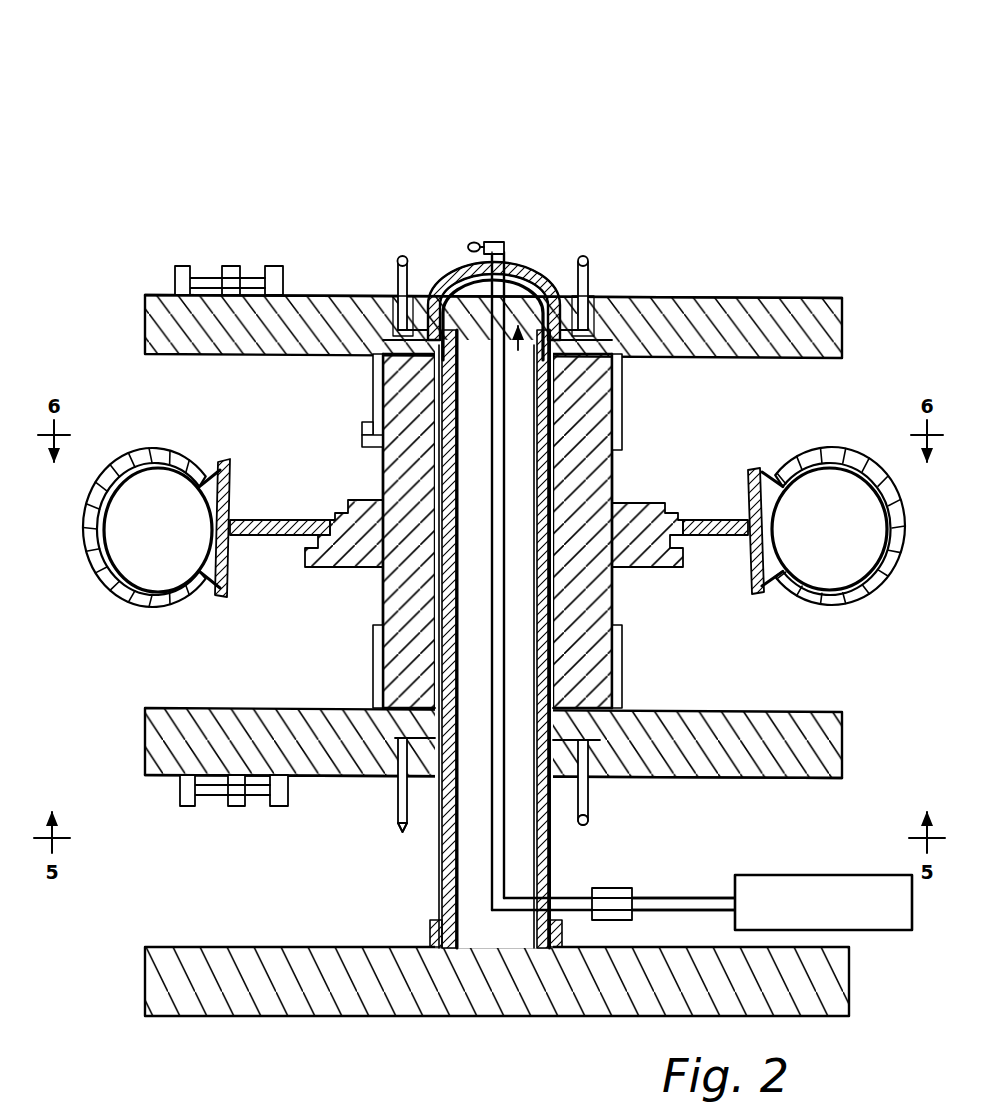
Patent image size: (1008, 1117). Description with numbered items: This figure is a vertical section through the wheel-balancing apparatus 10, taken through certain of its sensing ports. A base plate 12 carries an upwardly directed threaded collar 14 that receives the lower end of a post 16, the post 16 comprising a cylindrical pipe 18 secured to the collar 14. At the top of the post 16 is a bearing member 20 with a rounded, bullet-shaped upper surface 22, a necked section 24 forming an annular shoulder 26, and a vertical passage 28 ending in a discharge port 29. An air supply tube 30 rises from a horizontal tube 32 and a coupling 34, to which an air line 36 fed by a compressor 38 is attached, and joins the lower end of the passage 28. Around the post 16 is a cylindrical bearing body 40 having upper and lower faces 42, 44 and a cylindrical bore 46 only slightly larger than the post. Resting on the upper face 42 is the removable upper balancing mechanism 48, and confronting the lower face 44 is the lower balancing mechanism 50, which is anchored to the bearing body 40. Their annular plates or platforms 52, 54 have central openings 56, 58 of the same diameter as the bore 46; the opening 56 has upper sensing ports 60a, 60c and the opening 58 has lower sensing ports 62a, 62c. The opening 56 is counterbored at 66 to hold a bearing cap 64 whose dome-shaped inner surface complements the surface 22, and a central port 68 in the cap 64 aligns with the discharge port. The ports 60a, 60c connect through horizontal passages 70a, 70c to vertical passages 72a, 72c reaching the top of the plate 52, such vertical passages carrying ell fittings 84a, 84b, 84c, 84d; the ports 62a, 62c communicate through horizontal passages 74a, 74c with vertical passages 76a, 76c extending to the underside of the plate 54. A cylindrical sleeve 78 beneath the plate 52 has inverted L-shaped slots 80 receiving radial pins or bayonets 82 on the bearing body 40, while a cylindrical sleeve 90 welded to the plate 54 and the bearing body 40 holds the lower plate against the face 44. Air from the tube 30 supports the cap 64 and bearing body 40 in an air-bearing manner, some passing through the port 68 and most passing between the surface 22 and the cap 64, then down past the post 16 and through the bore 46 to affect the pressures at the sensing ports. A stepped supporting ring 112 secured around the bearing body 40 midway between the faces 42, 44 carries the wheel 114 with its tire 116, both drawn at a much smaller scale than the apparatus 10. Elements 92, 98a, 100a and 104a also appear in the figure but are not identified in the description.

The apparatus 10 is at (604, 96).
The base plate 12 is at (208, 947).
The threaded collar 14 is at (430, 935).
The post 16 is at (438, 866).
The cylindrical pipe 18 is at (444, 888).
The bearing member 20 is at (521, 358).
The rounded upper surface 22 is at (560, 298).
The necked section 24 is at (466, 358).
The annular shoulder 26 is at (437, 300).
The vertical passage 28 is at (498, 242).
The discharge port 29 is at (535, 272).
The air supply tube 30 is at (485, 548).
The horizontal tube 32 is at (572, 896).
The coupling 34 is at (620, 888).
The air line 36 is at (715, 896).
The compressor 38 is at (788, 875).
The cylindrical bearing body 40 is at (378, 606).
The upper face 42 is at (378, 380).
The lower face 44 is at (378, 668).
The cylindrical bore 46 is at (383, 578).
The upper balancing mechanism 48 is at (800, 286).
The lower balancing mechanism 50 is at (740, 790).
The upper plate or platform 52 is at (835, 296).
The lower plate or platform 54 is at (830, 778).
The central circular opening 56 is at (618, 382).
The central circular opening 58 is at (620, 705).
The upper sensing port 60a is at (400, 345).
The upper sensing port 60c is at (580, 345).
The lower sensing port 62a is at (372, 735).
The lower sensing port 62c is at (580, 735).
The bearing cap 64 is at (452, 298).
The counterbore 66 is at (596, 300).
The central port 68 is at (546, 290).
The horizontal passage 70a is at (415, 296).
The horizontal passage 70c is at (720, 296).
The vertical passage 72a is at (383, 298).
The vertical passage 72c is at (612, 300).
The lower horizontal passage 74a is at (395, 745).
The lower horizontal passage 74c is at (700, 742).
The vertical passage 76a is at (392, 780).
The vertical passage 76c is at (595, 788).
The cylindrical sleeve 78 is at (622, 420).
The inverted L-shaped slots 80 is at (362, 427).
The radial pins or bayonets 82 is at (365, 441).
The ell fitting 84a is at (400, 255).
The ell fitting 84b is at (587, 825).
The ell fitting 84c is at (588, 260).
The ell fitting 84d is at (400, 833).
The cylindrical sleeve 90 is at (625, 645).
The tube outlet 92 is at (507, 262).
The terminal 98a is at (274, 266).
The terminal 100a is at (231, 266).
The terminal 104a is at (183, 266).
The stepped supporting ring 112 is at (635, 503).
The wheel 114 is at (752, 478).
The tire 116 is at (838, 458).